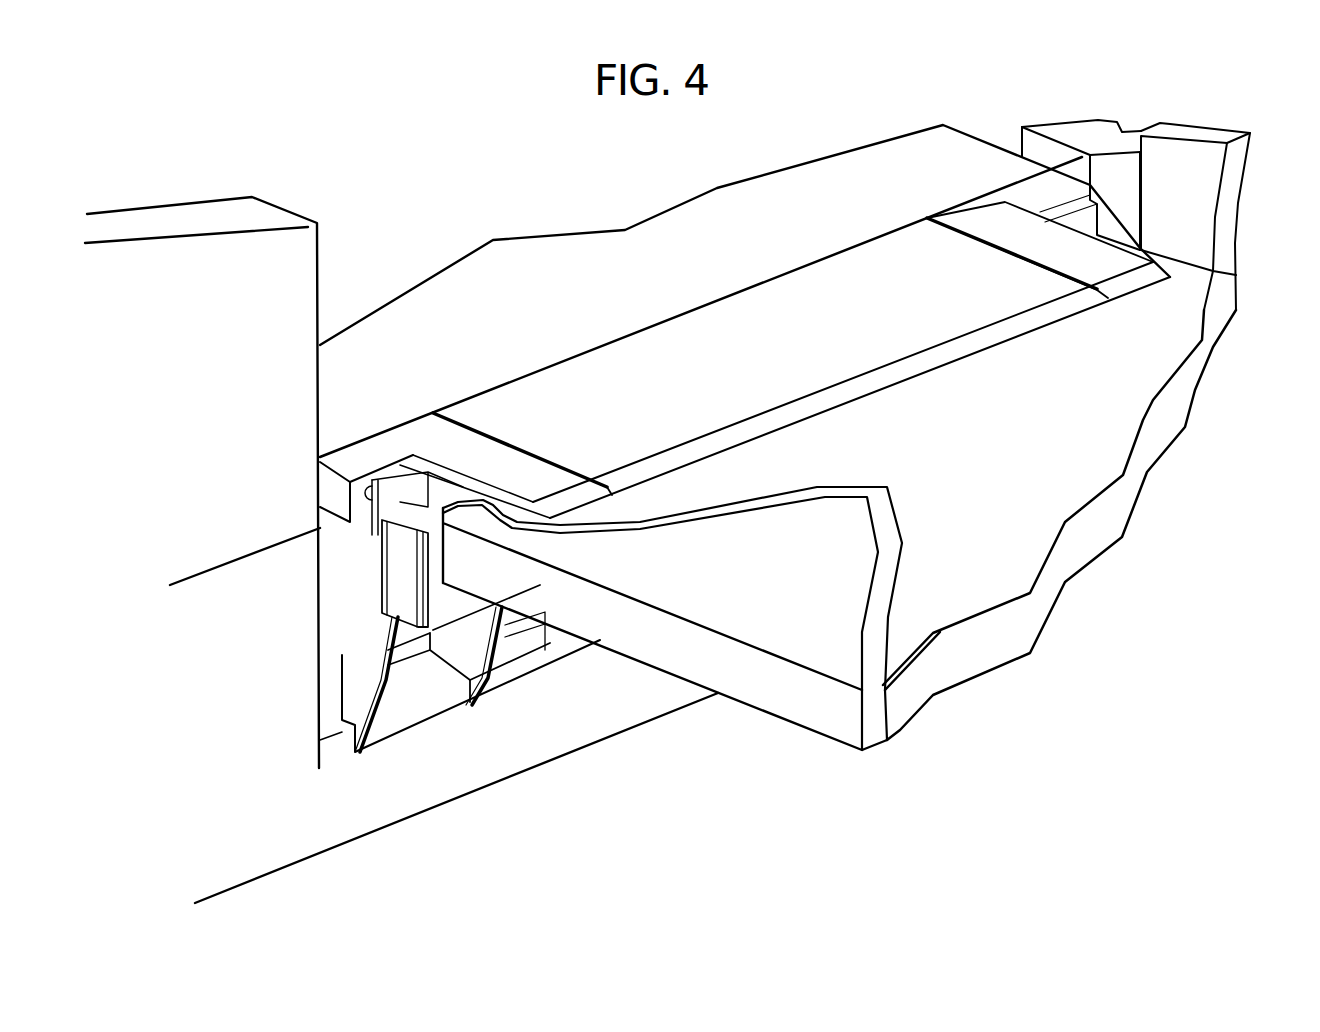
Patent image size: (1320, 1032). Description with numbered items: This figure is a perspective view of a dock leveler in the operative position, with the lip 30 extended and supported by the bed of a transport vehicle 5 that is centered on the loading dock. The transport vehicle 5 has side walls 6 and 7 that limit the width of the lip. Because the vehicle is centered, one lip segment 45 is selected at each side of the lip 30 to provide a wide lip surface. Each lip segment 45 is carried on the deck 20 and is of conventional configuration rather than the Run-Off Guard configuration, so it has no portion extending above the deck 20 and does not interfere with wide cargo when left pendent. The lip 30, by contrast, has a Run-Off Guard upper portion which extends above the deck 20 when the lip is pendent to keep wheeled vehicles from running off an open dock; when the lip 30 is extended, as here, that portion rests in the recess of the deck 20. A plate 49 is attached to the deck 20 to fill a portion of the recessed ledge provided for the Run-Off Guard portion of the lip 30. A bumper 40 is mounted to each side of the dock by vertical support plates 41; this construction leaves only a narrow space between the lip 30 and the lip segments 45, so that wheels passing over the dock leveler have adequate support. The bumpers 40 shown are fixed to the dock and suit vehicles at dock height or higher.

The transport vehicle 5 is at (1047, 532).
The side wall 6 is at (1205, 178).
The side wall 7 is at (791, 637).
The deck 20 is at (490, 257).
The lip assembly 30 is at (623, 363).
The bumper 40 is at (440, 602).
The vertical support plates 41 is at (386, 643).
The lip segment 45 is at (1020, 226).
The plate 49 is at (415, 427).